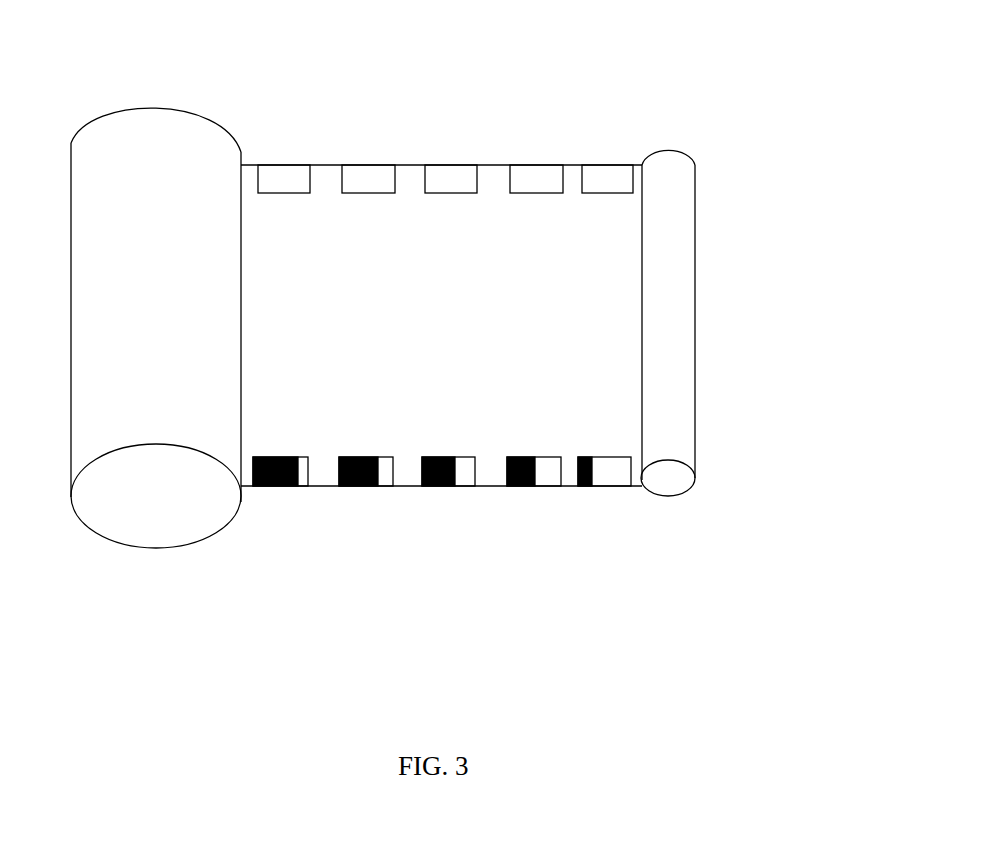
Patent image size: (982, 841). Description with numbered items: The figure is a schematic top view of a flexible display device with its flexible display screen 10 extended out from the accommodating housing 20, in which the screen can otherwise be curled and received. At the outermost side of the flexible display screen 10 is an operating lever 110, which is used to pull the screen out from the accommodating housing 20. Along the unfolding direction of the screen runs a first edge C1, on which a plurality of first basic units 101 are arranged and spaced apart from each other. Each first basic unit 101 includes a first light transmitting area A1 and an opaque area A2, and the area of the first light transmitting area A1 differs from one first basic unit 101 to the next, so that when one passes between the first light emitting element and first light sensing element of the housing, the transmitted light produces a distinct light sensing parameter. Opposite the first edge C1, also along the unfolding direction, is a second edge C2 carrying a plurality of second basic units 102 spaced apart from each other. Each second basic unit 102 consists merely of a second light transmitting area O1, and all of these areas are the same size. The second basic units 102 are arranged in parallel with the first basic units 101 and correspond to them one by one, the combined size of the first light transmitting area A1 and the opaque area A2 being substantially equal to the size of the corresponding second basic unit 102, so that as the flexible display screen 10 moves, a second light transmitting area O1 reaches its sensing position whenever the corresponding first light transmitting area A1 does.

The flexible display screen 10 is at (468, 280).
The accommodating housing 20 is at (155, 163).
The operating lever 110 is at (678, 363).
The first basic unit 101 is at (442, 560).
The second basic unit 102 is at (445, 132).
The second light transmitting area O1 is at (284, 186).
The first light transmitting area A1 is at (382, 486).
The opaque area A2 is at (357, 486).
The first edge C1 is at (528, 543).
The second edge C2 is at (618, 111).